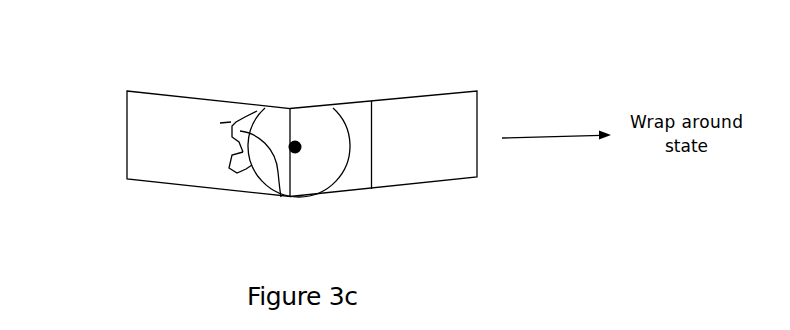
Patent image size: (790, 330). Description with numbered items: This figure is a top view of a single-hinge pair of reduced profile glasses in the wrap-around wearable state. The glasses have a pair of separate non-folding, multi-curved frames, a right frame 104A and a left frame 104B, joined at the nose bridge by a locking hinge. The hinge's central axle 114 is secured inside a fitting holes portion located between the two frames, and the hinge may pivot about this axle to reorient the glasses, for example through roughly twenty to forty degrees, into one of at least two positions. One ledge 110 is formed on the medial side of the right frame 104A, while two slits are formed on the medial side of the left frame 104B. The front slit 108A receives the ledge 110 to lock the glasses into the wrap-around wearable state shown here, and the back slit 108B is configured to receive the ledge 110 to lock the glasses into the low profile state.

The right frame 104A is at (428, 140).
The left frame 104B is at (145, 146).
The front slit 108A is at (228, 123).
The back slit 108B is at (230, 165).
The ledge 110 is at (276, 195).
The central axle 114 is at (304, 141).